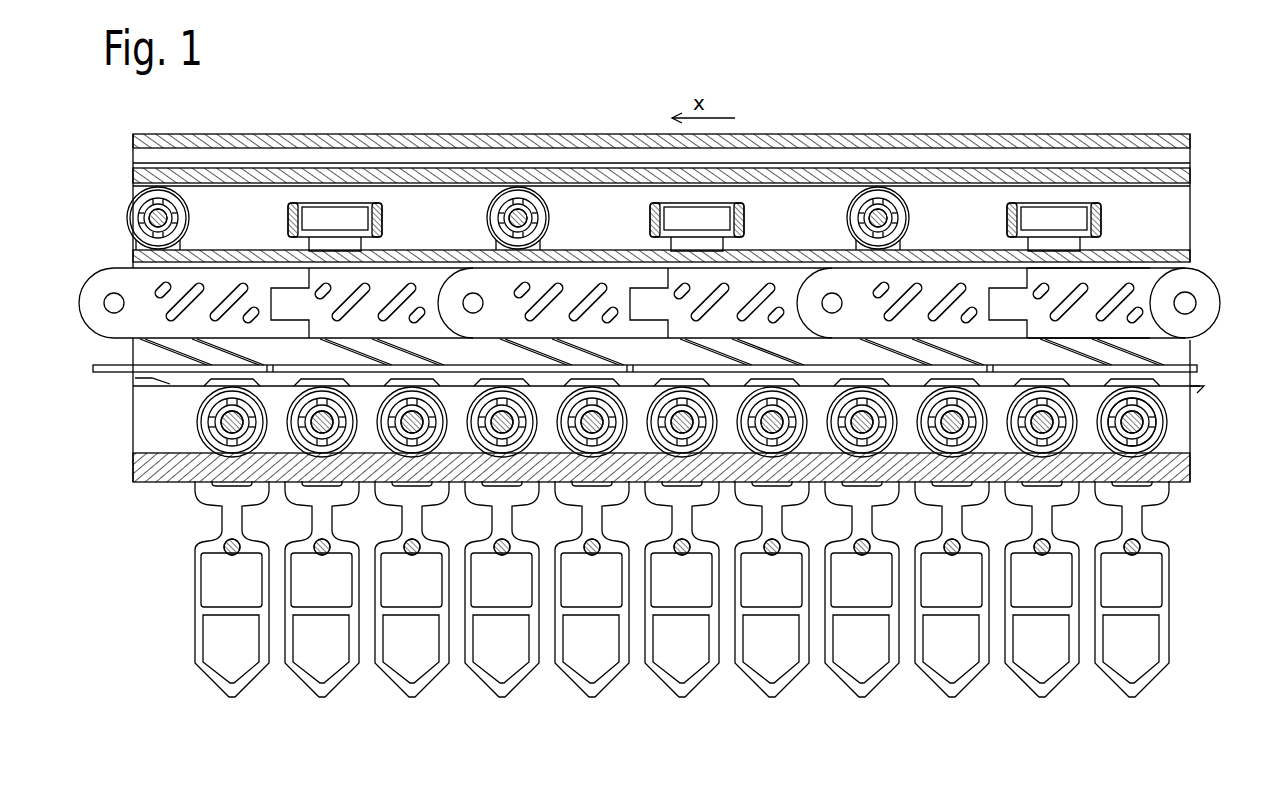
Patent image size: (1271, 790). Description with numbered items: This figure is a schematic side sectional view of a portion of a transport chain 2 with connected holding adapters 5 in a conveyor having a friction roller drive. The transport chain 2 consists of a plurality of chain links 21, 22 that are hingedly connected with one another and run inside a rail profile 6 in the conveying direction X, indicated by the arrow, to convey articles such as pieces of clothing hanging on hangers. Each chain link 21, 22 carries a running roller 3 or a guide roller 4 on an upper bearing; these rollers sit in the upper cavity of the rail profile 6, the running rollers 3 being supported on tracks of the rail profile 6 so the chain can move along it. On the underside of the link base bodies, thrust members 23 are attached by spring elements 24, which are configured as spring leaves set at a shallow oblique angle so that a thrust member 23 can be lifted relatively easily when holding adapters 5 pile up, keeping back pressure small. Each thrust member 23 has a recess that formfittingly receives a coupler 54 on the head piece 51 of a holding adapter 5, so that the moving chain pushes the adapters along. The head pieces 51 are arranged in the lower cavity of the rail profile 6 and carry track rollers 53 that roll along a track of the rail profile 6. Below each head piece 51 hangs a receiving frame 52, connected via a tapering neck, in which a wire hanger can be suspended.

The transport chain 2 is at (1203, 255).
The running roller 3 is at (884, 188).
The guide roller 4 is at (1040, 222).
The holding adapter 5 is at (170, 604).
The rail profile 6 is at (133, 466).
The chain link 21 is at (1105, 285).
The chain link 22 is at (937, 280).
The thrust member 23 is at (172, 377).
The spring element 24 is at (133, 348).
The head piece 51 is at (1160, 445).
The receiving frame 52 is at (1165, 620).
The track roller 53 is at (1147, 423).
The coupler 54 is at (1123, 388).